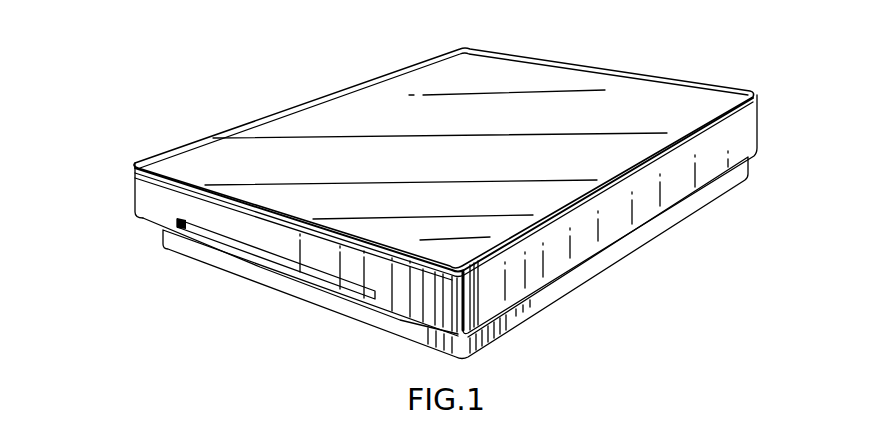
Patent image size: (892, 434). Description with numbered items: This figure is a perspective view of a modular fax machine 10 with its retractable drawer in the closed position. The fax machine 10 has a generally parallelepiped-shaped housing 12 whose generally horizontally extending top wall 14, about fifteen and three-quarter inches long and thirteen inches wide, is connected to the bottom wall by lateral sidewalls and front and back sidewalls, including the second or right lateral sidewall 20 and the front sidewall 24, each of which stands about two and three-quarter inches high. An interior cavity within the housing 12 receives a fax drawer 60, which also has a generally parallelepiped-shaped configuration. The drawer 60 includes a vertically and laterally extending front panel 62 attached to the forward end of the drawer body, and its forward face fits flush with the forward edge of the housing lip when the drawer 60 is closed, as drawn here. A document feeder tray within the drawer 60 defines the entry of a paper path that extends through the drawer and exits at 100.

The modular fax machine 10 is at (286, 86).
The housing 12 is at (373, 70).
The top wall 14 is at (287, 125).
The second (right) lateral sidewall 20 is at (582, 243).
The front sidewall 24 is at (388, 320).
The fax drawer 60 is at (122, 195).
The front panel 62 is at (157, 213).
The paper path exit 100 is at (273, 272).